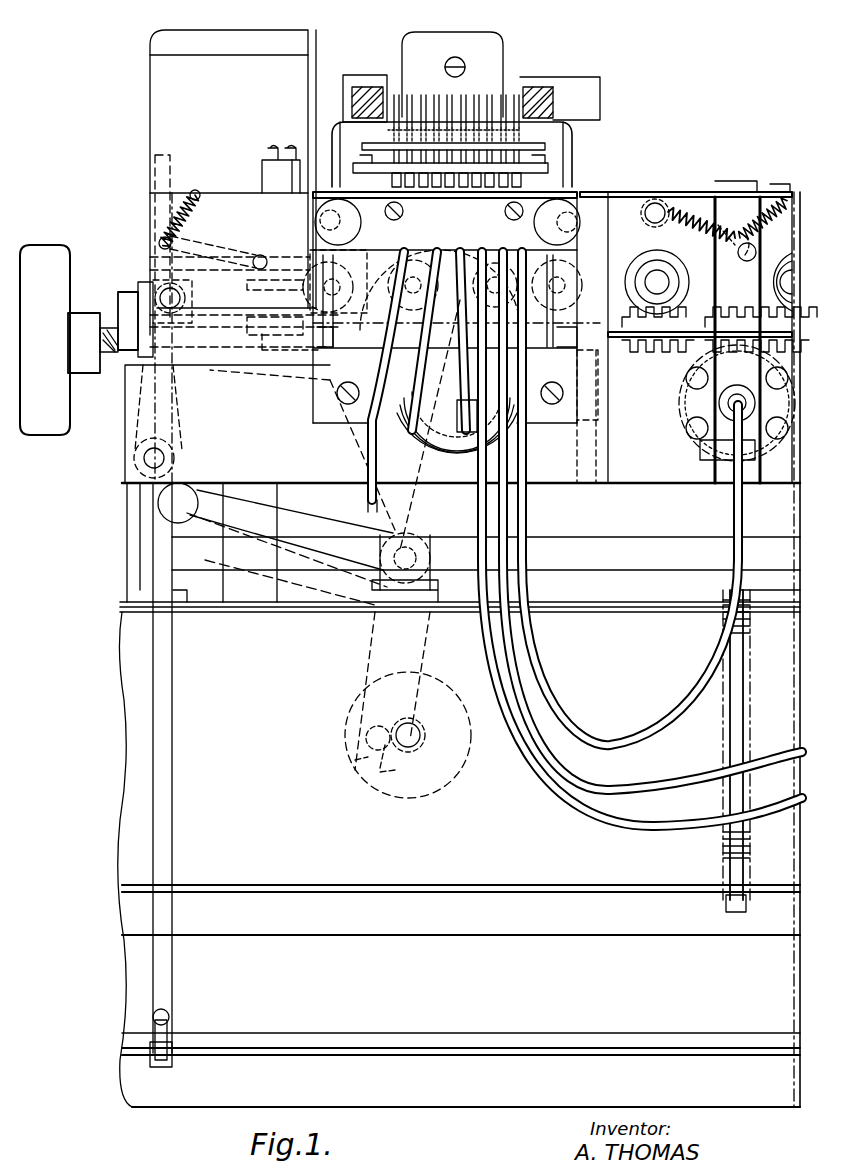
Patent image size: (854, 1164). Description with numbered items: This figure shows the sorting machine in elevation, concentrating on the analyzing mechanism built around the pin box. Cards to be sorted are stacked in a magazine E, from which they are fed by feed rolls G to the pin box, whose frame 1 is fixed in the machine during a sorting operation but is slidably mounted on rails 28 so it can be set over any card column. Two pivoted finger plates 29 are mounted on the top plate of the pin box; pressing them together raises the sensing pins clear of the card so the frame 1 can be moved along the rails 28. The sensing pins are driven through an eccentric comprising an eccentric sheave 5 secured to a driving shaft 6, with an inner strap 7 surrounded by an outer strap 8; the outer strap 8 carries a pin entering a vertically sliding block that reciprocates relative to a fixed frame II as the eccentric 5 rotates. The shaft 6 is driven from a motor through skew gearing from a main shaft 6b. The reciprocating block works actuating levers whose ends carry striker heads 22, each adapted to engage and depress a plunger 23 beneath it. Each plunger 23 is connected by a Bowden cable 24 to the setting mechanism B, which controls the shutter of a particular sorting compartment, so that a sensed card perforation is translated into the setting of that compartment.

The pin box frame 1 is at (388, 83).
The eccentric sheave 5 is at (447, 393).
The driving shaft 6 is at (423, 405).
The inner strap 7 is at (410, 430).
The outer strap 8 is at (457, 432).
The fixed frame II is at (350, 358).
The main shaft 6b is at (596, 420).
The striker heads 22 is at (463, 93).
The plunger 23 is at (547, 168).
The Bowden cable 24 is at (598, 780).
The rails 28 is at (560, 100).
The finger plates 29 is at (456, 40).
The setting mechanism B is at (680, 412).
The magazine E is at (163, 83).
The feed rolls G is at (300, 280).